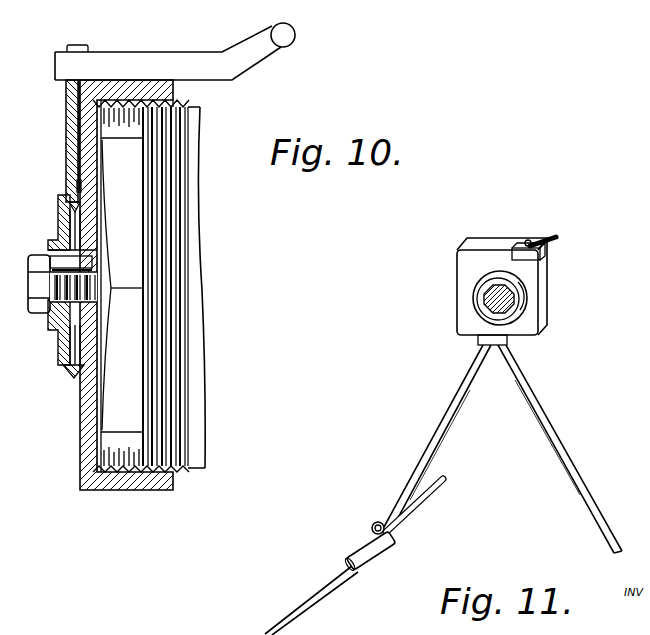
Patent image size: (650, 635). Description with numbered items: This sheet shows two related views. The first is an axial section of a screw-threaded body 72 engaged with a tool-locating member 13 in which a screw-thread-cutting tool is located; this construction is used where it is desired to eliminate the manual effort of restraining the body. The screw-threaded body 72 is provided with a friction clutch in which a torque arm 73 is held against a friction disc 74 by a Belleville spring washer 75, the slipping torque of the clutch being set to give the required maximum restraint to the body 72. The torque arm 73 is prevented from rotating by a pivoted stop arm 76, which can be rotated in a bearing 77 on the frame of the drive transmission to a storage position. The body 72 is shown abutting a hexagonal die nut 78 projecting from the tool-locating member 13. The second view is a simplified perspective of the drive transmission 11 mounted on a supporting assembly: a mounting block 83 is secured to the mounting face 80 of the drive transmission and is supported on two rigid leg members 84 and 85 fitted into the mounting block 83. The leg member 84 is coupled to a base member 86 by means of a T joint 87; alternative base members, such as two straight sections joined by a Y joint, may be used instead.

In FIG. 11, the camera/projector housing 11 is at (457, 290).
In FIG. 10, the tool-locating member 13 is at (178, 473).
In FIG. 10, the screw-threaded body 72 is at (86, 453).
In FIG. 10, the torque arm 73 is at (67, 118).
In FIG. 10, the friction disc 74 is at (78, 186).
In FIG. 10, the Belleville spring washer 75 is at (60, 208).
In FIG. 10, the pivoted stop arm 76 is at (134, 62).
In FIG. 10, the bearing 77 is at (279, 33).
In FIG. 10, the hexagonal die nut 78 is at (120, 393).
In FIG. 11, the mounting face 80 is at (537, 330).
In FIG. 11, the mounting block 83 is at (480, 338).
In FIG. 11, the leg member 84 is at (456, 385).
In FIG. 11, the leg member 85 is at (534, 394).
In FIG. 11, the base member 86 is at (432, 498).
In FIG. 11, the T joint 87 is at (376, 525).